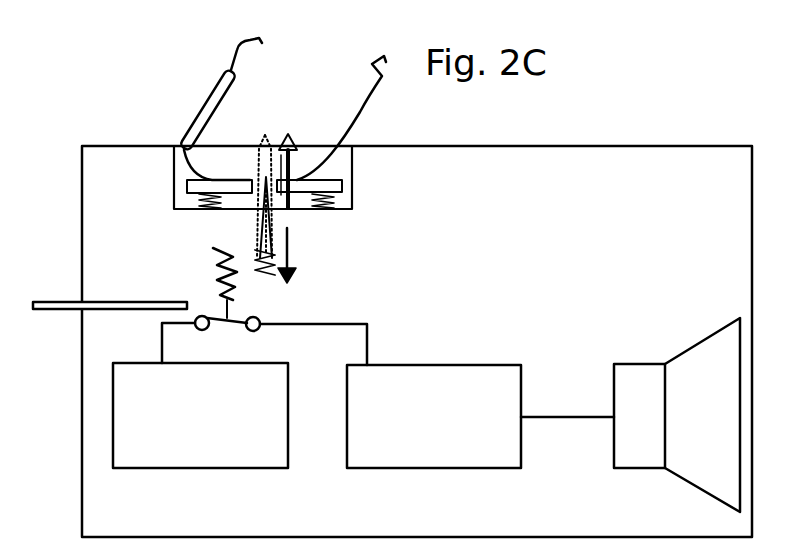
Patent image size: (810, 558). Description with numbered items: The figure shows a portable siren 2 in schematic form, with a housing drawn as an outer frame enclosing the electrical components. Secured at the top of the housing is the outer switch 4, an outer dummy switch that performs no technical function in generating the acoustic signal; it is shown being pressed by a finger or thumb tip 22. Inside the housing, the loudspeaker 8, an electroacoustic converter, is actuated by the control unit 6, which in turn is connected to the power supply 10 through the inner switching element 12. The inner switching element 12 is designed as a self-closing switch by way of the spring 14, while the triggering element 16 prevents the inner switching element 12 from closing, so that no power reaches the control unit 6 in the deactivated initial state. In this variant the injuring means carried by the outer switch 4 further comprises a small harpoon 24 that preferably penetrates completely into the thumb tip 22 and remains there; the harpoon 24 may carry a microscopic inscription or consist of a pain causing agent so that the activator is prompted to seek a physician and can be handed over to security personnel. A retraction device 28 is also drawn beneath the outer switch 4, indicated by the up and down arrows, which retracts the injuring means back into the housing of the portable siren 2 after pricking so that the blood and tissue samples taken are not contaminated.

The portable siren 2 is at (470, 131).
The outer switch 4 is at (190, 191).
The control unit 6 is at (434, 416).
The loudspeaker 8 is at (677, 415).
The power supply 10 is at (200, 415).
The inner switching element 12 is at (210, 264).
The spring 14 is at (190, 285).
The triggering element 16 is at (70, 314).
The thumb tip 22 is at (230, 126).
The harpoon 24 is at (298, 148).
The retraction device 28 is at (277, 207).